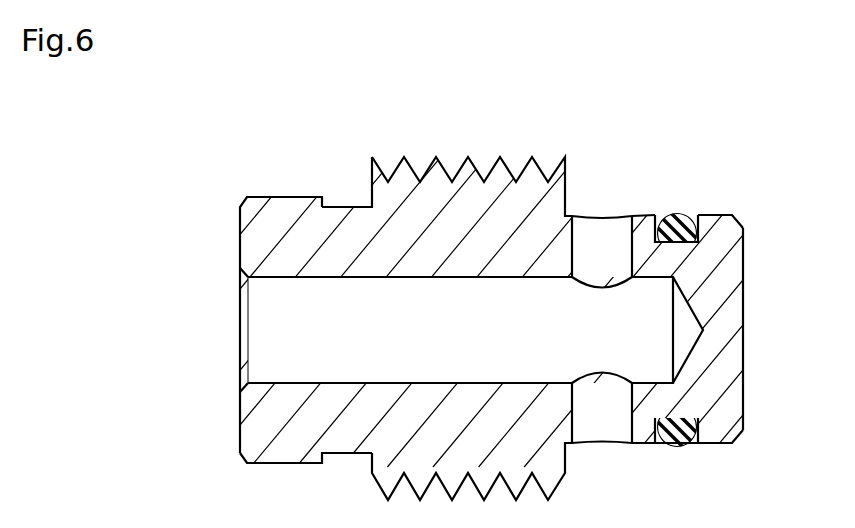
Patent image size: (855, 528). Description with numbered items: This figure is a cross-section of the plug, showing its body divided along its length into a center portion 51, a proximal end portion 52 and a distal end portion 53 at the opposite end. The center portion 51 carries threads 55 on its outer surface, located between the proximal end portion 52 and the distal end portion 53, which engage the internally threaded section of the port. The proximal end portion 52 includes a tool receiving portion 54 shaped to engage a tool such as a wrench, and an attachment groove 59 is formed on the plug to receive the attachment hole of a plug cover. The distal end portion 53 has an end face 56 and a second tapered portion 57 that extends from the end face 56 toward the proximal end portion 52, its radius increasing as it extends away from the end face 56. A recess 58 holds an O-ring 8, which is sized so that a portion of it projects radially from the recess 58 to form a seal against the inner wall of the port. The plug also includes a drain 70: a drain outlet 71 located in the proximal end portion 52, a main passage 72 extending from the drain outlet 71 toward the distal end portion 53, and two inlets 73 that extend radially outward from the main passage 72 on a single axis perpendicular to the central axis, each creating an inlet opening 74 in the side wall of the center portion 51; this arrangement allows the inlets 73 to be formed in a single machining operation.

The O-ring 8 is at (674, 444).
The center portion 51 is at (463, 218).
The proximal end portion 52 is at (278, 450).
The distal end portion 53 is at (718, 432).
The tool receiving portion 54 is at (258, 197).
The threads 55 is at (410, 167).
The end face 56 is at (744, 293).
The second tapered portion 57 is at (744, 215).
The recess 58 is at (690, 218).
The attachment groove 59 is at (347, 207).
The drain 70 is at (285, 333).
The drain outlet 71 is at (240, 289).
The main passage 72 is at (348, 358).
The inlets 73 is at (588, 240).
The inlet opening 74 is at (618, 215).